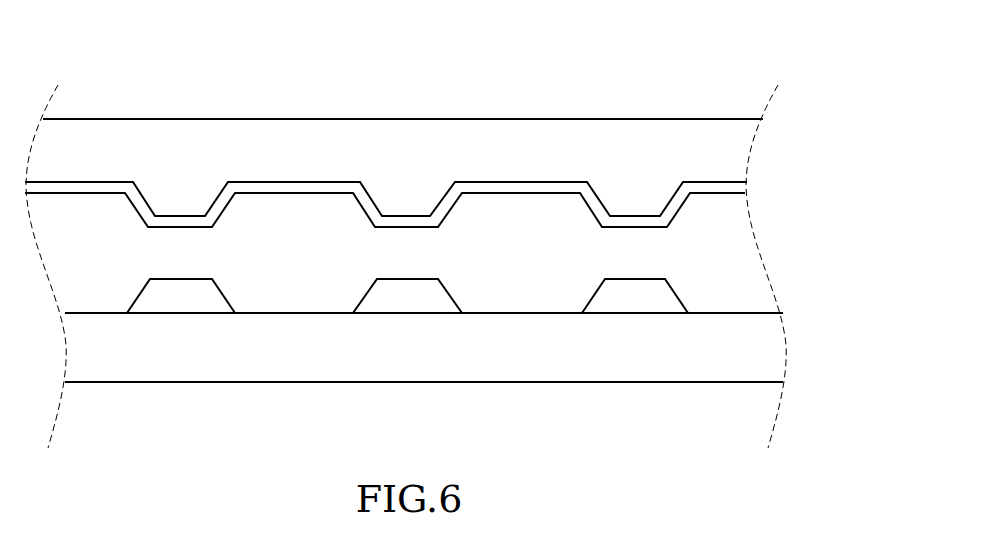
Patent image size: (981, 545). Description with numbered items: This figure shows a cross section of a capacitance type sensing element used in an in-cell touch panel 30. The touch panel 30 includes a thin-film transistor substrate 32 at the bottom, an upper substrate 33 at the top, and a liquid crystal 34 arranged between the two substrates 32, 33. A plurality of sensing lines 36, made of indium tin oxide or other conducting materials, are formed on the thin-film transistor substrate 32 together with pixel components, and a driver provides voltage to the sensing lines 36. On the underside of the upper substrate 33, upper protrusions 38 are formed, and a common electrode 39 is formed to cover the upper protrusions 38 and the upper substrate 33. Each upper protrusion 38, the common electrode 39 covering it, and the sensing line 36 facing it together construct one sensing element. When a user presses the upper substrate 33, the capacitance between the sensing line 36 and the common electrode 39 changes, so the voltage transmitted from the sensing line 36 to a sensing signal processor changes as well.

The touch panel 30 is at (130, 46).
The thin-film transistor substrate 32 is at (738, 357).
The upper substrate 33 is at (738, 157).
The liquid crystal 34 is at (738, 262).
The sensing line 36 is at (410, 298).
The upper protrusion 38 is at (405, 195).
The common electrode 39 is at (363, 195).